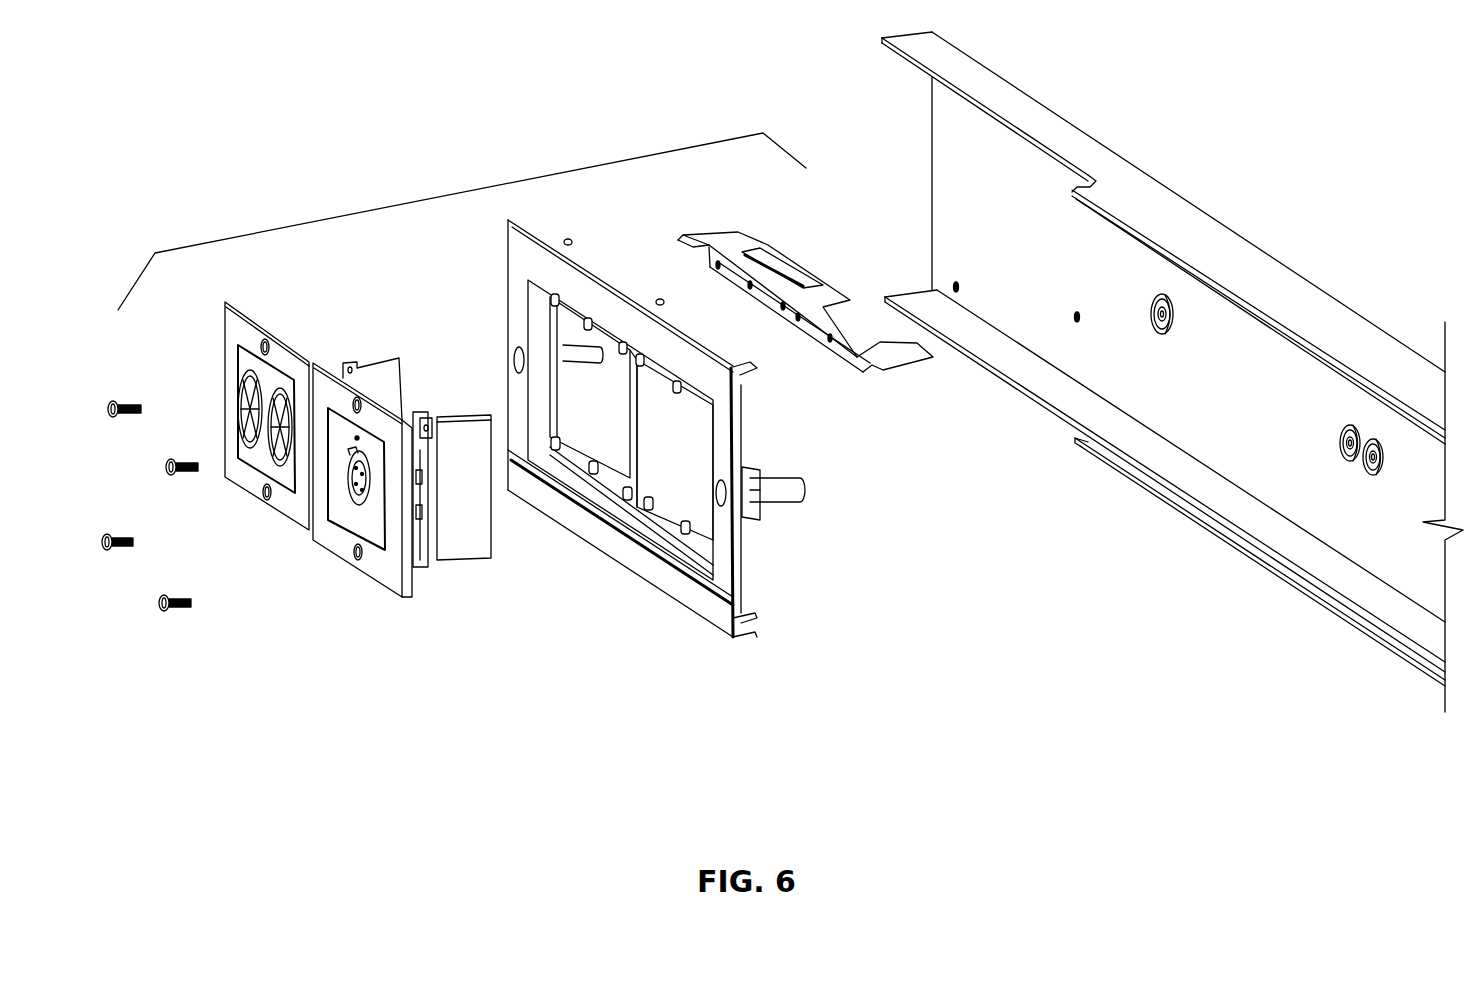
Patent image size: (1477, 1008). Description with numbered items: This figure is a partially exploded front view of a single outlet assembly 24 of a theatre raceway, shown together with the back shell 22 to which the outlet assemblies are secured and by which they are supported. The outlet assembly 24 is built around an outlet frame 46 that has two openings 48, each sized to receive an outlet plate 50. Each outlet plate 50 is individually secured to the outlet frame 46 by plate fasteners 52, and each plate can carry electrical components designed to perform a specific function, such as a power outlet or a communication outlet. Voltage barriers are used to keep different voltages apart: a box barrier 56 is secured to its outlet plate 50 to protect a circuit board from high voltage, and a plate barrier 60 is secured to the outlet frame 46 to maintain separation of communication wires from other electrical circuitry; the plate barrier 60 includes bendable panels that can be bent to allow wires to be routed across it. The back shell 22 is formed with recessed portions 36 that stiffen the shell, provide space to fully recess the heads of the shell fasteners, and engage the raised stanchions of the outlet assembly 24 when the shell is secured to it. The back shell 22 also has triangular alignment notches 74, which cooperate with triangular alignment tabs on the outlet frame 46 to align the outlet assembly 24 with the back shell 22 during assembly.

The back shell 22 is at (1256, 408).
The outlet assembly 24 is at (450, 195).
The recessed portion 36 is at (1157, 334).
The outlet frame 46 is at (746, 447).
The opening 48 is at (602, 421).
The outlet plate 50 is at (413, 583).
The plate fastener 52 is at (187, 606).
The box barrier 56 is at (470, 497).
The plate barrier 60 is at (727, 238).
The triangular alignment notch 74 is at (1174, 265).